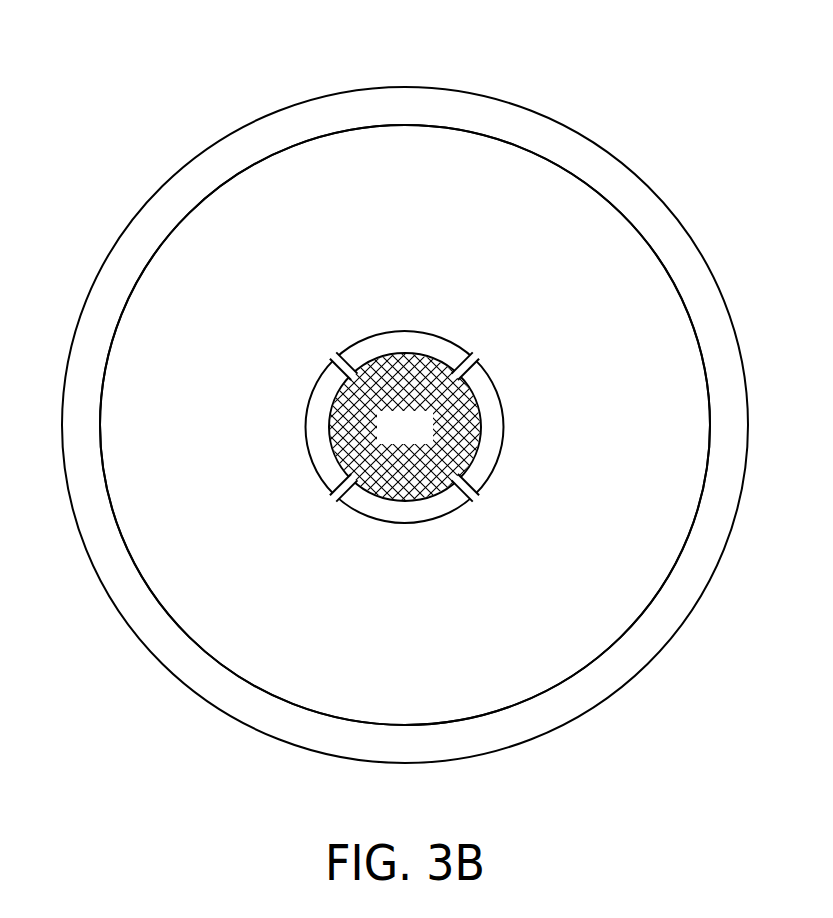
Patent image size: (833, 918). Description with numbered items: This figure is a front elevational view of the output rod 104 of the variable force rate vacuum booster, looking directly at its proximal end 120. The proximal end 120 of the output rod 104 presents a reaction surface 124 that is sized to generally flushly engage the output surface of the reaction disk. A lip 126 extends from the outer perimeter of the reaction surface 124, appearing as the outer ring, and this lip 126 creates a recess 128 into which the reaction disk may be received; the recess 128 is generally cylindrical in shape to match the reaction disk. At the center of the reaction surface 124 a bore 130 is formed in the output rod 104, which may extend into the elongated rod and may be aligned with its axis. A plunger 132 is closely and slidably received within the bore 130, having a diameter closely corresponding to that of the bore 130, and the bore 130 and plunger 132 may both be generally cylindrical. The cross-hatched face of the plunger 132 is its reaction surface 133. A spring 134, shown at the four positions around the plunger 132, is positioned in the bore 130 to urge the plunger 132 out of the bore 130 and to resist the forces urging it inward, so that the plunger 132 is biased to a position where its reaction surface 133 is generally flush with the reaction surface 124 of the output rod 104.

The output rod 104 is at (657, 193).
The proximal end 120 is at (675, 105).
The reaction surface 124 is at (546, 296).
The lip 126 is at (717, 301).
The recess 128 is at (472, 196).
The bore 130 is at (503, 405).
The plunger 132 is at (465, 447).
The reaction surface of the plunger 133 is at (405, 429).
The spring 134 is at (340, 362).